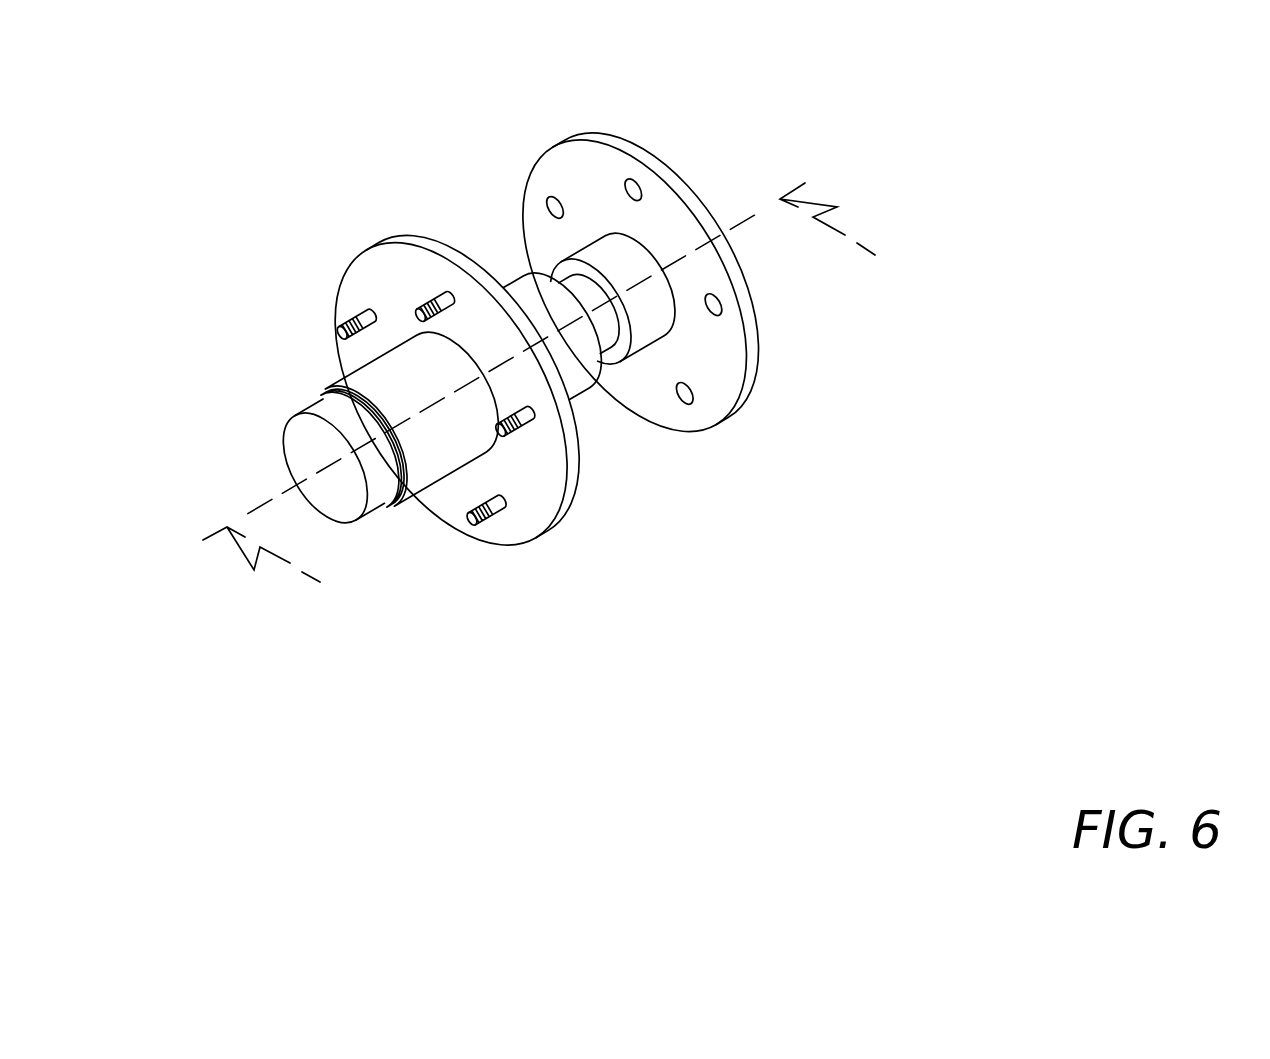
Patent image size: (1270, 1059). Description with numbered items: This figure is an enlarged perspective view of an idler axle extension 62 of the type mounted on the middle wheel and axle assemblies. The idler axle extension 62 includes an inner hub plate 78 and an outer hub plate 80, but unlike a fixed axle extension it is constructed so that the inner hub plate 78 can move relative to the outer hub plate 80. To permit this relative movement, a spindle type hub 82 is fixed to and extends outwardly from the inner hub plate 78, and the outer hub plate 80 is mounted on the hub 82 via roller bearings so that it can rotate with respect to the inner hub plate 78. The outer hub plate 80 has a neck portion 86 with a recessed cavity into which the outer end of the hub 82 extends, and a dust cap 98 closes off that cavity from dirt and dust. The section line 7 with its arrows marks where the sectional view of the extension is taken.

The idler axle extension 62 is at (403, 198).
The inner hub plate 78 is at (674, 172).
The outer hub plate 80 is at (527, 482).
The spindle type hub 82 is at (603, 347).
The neck portion 86 is at (438, 452).
The dust cap 98 is at (298, 440).
The section line 7- 7 is at (551, 400).